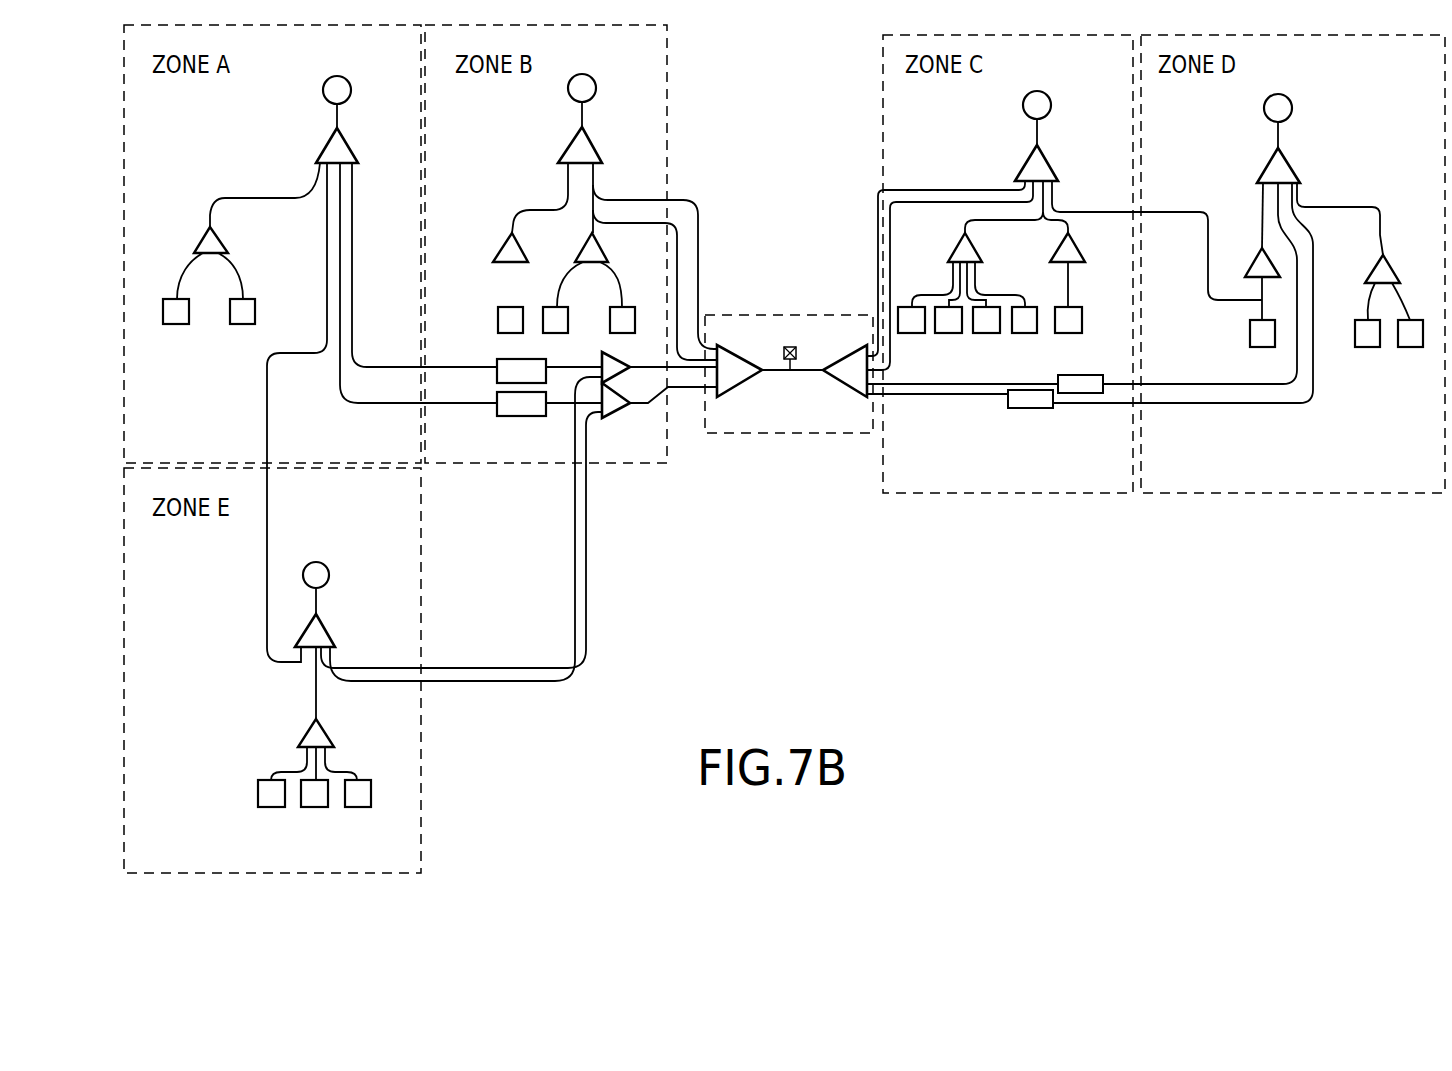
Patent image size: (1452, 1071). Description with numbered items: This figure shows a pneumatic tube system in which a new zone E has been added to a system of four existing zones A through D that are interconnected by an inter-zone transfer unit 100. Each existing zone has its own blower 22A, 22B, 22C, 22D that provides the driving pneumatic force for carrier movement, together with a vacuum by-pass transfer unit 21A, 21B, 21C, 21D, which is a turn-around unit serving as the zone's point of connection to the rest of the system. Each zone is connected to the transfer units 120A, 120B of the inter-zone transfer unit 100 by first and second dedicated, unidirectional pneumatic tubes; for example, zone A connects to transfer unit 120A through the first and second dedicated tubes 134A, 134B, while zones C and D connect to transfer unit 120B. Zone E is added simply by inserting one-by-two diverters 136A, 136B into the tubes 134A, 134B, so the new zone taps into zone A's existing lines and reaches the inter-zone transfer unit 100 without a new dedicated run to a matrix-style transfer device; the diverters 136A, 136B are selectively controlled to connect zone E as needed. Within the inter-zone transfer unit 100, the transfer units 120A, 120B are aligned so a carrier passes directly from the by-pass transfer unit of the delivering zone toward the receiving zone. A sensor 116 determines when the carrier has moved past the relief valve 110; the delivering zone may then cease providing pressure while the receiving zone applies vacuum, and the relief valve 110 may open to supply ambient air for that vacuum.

The blower 22A is at (351, 88).
The vacuum by-pass transfer unit 21A is at (350, 146).
The blower 22B is at (596, 87).
The vacuum by-pass transfer unit 21B is at (594, 141).
The blower 22C is at (1051, 104).
The vacuum by-pass transfer unit 21C is at (1051, 158).
The blower 22D is at (1292, 106).
The vacuum by-pass transfer unit 21D is at (1290, 165).
The first dedicated tube 134A is at (452, 367).
The second dedicated tube 134B is at (453, 403).
The 1×2 diverter 136A is at (608, 355).
The 1×2 diverter 136B is at (616, 410).
The transfer unit 120A is at (735, 385).
The transfer unit 120B is at (848, 385).
The sensor 116 is at (792, 372).
The relief valve 110 is at (797, 350).
The inter-zone transfer unit 100 is at (781, 433).